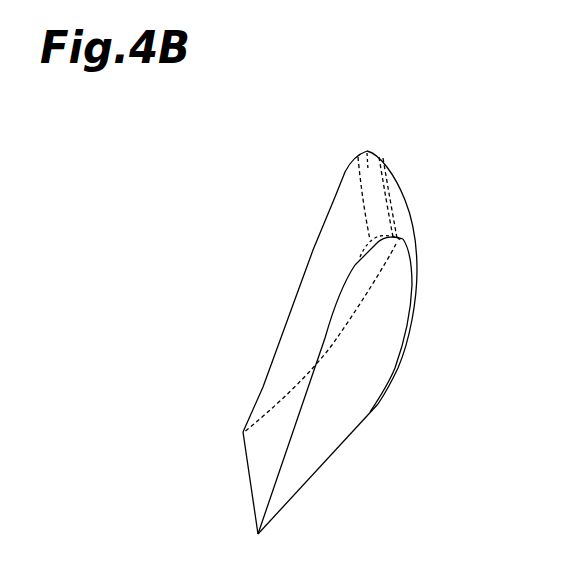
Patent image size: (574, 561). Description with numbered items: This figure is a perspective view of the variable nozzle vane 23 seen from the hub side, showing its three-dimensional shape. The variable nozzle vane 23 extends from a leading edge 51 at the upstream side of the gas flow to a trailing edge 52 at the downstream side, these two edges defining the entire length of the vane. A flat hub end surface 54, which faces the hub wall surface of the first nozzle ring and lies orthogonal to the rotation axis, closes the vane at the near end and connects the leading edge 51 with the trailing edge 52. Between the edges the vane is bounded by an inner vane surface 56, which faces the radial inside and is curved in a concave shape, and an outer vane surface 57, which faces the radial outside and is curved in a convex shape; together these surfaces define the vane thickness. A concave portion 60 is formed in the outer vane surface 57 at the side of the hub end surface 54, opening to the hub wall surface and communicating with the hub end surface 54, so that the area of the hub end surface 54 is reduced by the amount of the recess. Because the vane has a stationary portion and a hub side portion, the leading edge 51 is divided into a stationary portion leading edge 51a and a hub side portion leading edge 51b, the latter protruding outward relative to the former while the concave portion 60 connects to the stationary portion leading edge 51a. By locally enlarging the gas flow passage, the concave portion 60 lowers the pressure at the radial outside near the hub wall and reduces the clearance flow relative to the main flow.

The variable nozzle vane 23 is at (445, 160).
The leading edge 51 is at (433, 90).
The stationary portion leading edge 51a is at (367, 151).
The hub side portion leading edge 51b is at (414, 228).
The trailing edge 52 is at (245, 485).
The hub end surface 54 is at (345, 412).
The inner vane surface 56 is at (307, 320).
The outer vane surface 57 is at (405, 340).
The concave portion 60 is at (395, 364).